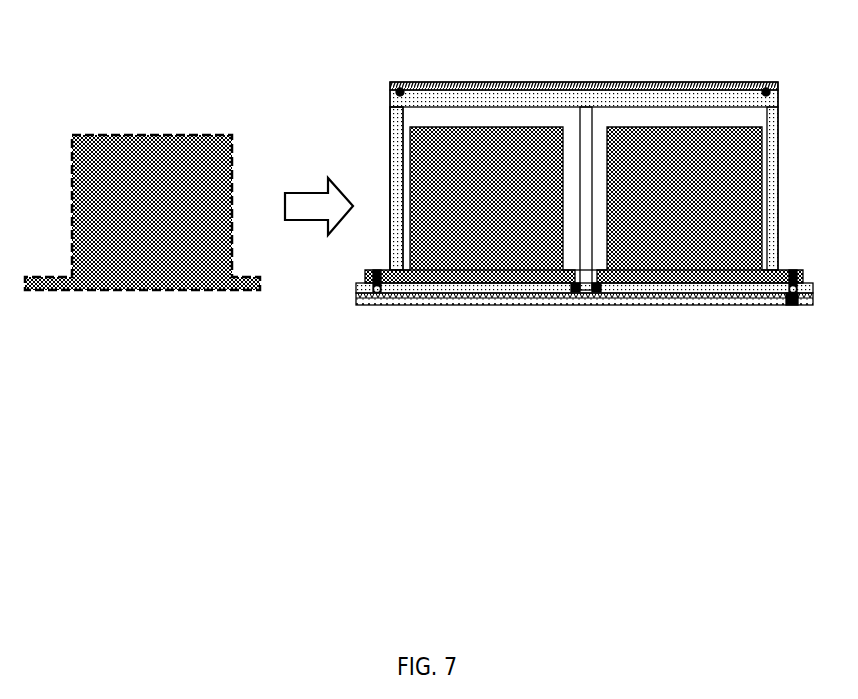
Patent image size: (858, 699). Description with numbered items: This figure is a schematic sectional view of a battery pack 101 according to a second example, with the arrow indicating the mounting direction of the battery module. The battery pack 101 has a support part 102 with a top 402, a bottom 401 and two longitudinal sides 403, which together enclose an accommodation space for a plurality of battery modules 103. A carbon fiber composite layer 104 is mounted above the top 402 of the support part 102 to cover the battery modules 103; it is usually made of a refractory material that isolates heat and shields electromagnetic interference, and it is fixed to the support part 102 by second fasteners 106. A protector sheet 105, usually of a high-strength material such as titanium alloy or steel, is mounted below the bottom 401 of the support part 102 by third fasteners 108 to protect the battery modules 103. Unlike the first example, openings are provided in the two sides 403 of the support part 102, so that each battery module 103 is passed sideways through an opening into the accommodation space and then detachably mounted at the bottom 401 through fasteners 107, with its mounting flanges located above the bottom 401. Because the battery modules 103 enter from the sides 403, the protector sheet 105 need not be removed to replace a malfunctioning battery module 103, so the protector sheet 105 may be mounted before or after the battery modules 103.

The battery pack 101 is at (576, 153).
The support part 102 is at (389, 141).
The battery module 103 is at (131, 270).
The carbon fiber composite layer 104 is at (608, 82).
The protector sheet 105 is at (512, 296).
The second fastener 106 is at (762, 88).
The fastener 107 is at (362, 279).
The third fastener 108 is at (786, 298).
The bottom of the support part 401 is at (409, 292).
The top of the support part 402 is at (545, 100).
The sides of the support part 403 is at (779, 158).